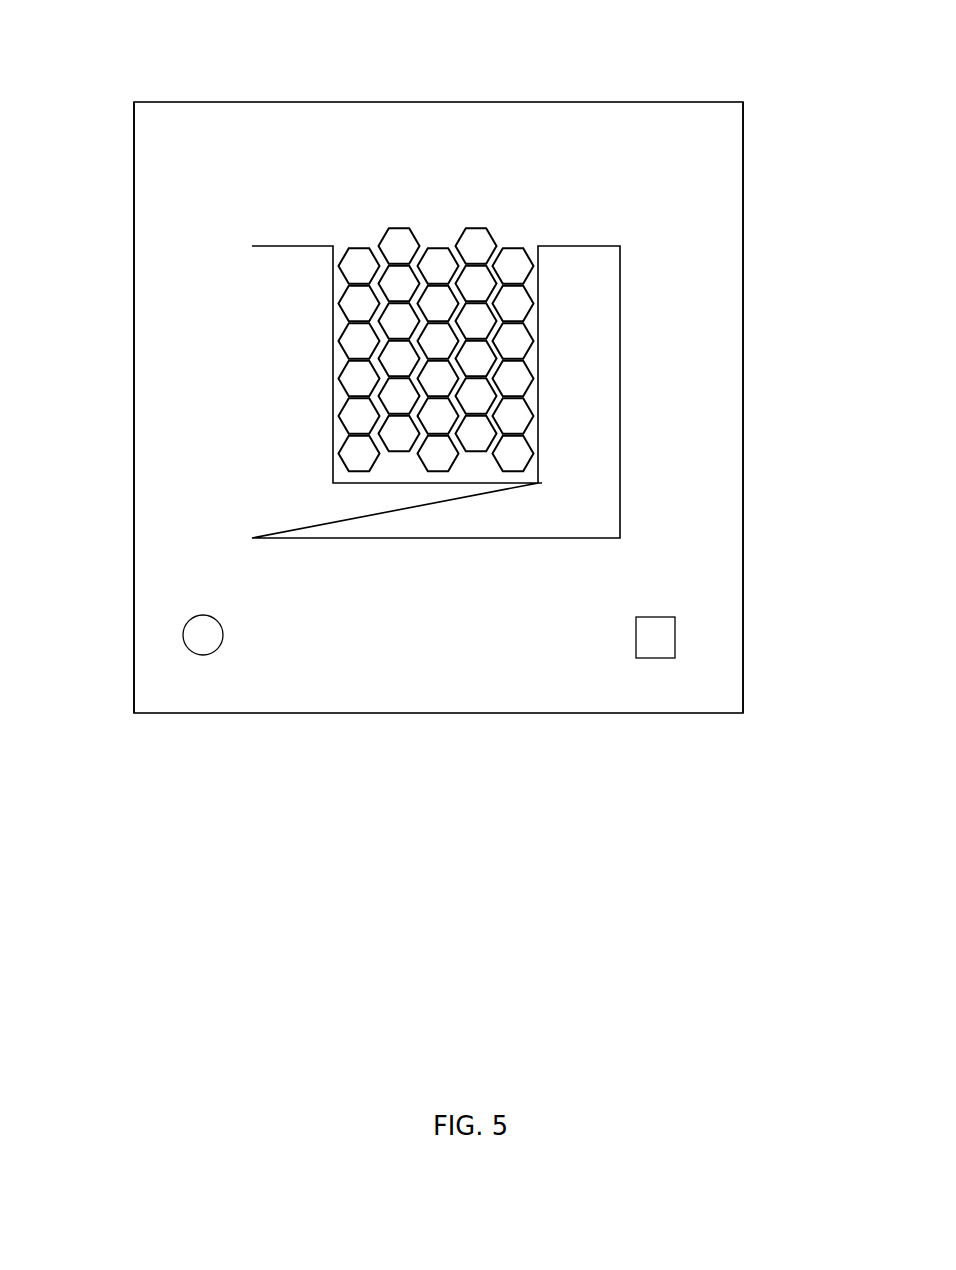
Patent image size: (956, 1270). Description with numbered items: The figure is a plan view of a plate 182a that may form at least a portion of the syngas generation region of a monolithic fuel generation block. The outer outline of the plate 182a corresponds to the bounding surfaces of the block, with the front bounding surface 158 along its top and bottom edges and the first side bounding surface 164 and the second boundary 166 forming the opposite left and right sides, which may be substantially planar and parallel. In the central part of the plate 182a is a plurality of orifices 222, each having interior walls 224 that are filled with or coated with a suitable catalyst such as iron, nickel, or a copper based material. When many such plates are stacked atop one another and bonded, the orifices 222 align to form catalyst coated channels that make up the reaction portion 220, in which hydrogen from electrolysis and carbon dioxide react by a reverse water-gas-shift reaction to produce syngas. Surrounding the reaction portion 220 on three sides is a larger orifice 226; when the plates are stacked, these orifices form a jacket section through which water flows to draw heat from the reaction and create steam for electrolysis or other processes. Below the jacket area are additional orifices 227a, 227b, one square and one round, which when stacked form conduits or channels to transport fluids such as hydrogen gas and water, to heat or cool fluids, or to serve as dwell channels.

The front bounding surface 158 is at (385, 102).
The first side bounding surface 164 is at (134, 376).
The second boundary 166 is at (743, 338).
The plate 182a is at (134, 193).
The reaction portion 220 is at (422, 302).
The orifices 222 is at (357, 262).
The interior walls 224 is at (462, 276).
The orifice 226 is at (436, 392).
The additional orifice 227a is at (655, 627).
The additional orifice 227b is at (202, 632).